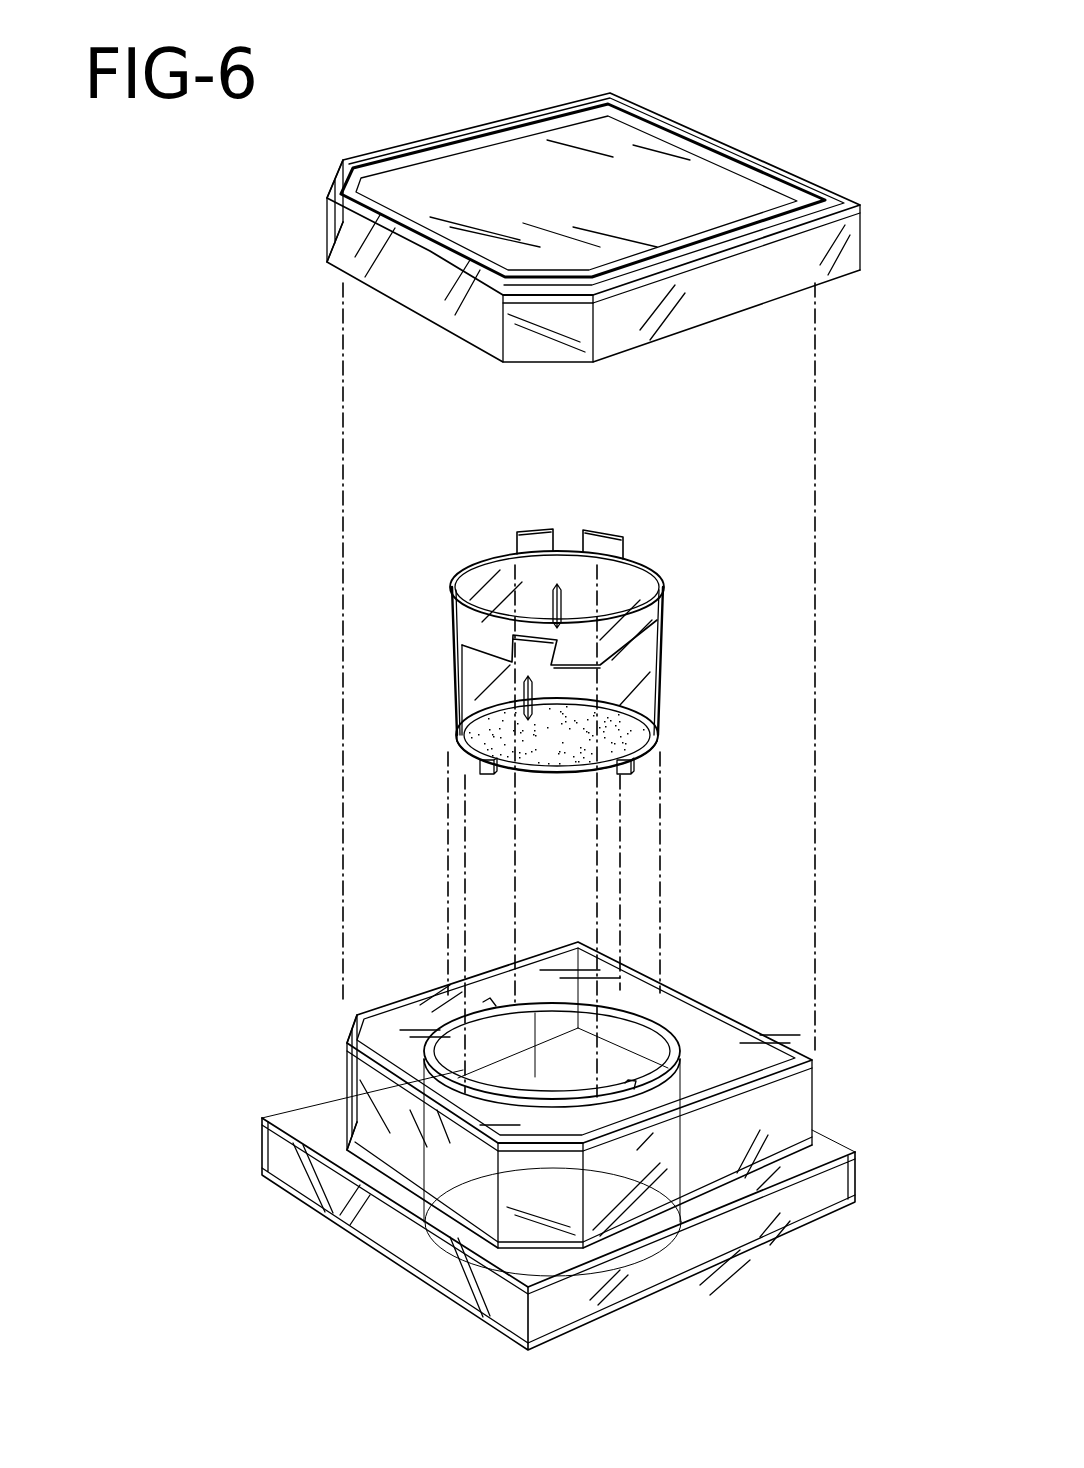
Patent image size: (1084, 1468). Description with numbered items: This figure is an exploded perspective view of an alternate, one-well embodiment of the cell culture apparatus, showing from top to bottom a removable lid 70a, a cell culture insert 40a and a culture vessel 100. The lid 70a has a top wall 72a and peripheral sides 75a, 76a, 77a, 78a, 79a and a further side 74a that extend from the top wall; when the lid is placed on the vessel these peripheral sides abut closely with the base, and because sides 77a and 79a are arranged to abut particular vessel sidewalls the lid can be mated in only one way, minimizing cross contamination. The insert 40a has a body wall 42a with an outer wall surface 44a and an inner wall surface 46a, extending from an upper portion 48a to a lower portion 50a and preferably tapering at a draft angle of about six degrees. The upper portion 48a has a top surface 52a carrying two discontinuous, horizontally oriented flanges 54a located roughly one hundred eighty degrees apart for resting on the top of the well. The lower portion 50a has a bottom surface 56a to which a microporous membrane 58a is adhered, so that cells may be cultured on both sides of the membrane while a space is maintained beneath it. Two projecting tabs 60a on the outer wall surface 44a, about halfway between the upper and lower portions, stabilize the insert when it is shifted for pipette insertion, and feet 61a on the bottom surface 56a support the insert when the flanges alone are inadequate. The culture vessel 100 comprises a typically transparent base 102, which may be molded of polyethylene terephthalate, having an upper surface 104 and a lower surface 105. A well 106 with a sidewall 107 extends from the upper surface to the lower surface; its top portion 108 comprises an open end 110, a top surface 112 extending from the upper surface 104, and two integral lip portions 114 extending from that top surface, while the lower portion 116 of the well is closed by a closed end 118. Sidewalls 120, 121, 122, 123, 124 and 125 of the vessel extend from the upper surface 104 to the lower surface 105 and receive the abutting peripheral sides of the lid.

The removable lid 70a is at (708, 132).
The top wall 72a is at (560, 165).
The side wall 74a is at (690, 297).
The peripheral side 75a is at (843, 196).
The peripheral side 76a is at (483, 122).
The peripheral side 77a is at (330, 196).
The peripheral side 78a is at (482, 316).
The peripheral side 79a is at (578, 350).
The cell culture insert 40a is at (640, 540).
The body wall 42a is at (670, 662).
The outer wall surface 44a is at (525, 680).
The inner wall surface 46a is at (462, 715).
The upper portion 48a is at (668, 612).
The lower portion 50a is at (660, 728).
The top surface 52a is at (665, 585).
The flanges 54a is at (535, 545).
The bottom surface 56a is at (655, 752).
The microporous membrane 58a is at (563, 760).
The projecting tabs 60a is at (553, 585).
The feet 61a is at (478, 770).
The culture vessel 100 is at (345, 1237).
The base 102 is at (795, 1215).
The upper surface 104 is at (352, 1046).
The lower surface 105 is at (650, 1300).
The well 106 is at (740, 1030).
The sidewall 107 is at (722, 1258).
The top portion 108 is at (405, 1147).
The open end 110 is at (680, 1016).
The top surface 112 is at (492, 1003).
The integral lip portions 114 is at (700, 1048).
The front left wall 116 is at (368, 1232).
The closed end 118 is at (447, 1240).
The sidewall 120 is at (425, 1000).
The sidewall 121 is at (647, 1012).
The sidewall 122 is at (806, 1105).
The sidewall 123 is at (527, 1220).
The sidewall 124 is at (345, 1160).
The sidewall 125 is at (358, 1016).